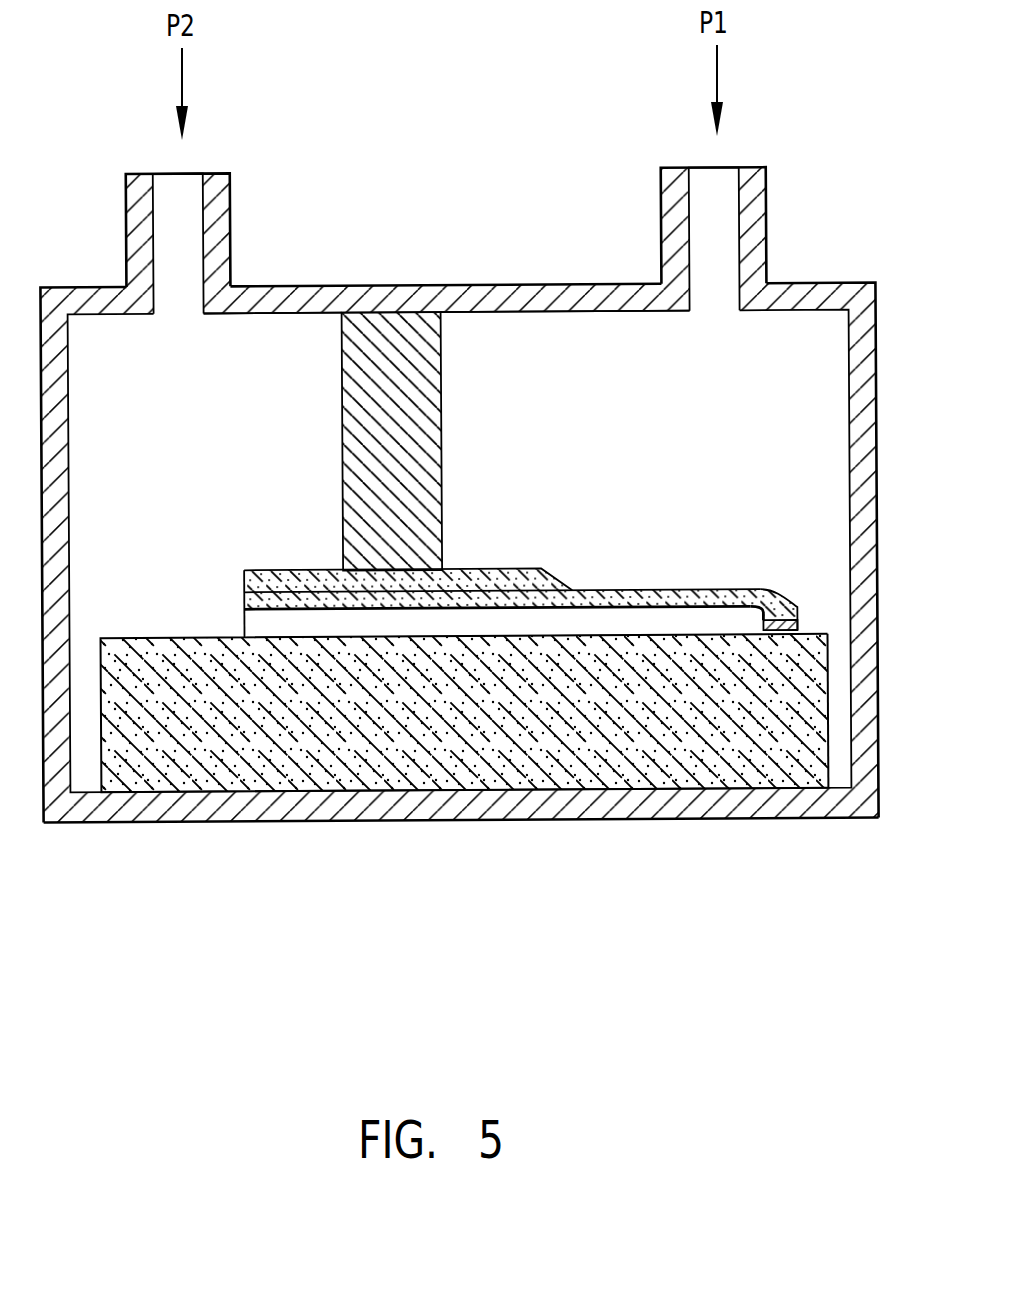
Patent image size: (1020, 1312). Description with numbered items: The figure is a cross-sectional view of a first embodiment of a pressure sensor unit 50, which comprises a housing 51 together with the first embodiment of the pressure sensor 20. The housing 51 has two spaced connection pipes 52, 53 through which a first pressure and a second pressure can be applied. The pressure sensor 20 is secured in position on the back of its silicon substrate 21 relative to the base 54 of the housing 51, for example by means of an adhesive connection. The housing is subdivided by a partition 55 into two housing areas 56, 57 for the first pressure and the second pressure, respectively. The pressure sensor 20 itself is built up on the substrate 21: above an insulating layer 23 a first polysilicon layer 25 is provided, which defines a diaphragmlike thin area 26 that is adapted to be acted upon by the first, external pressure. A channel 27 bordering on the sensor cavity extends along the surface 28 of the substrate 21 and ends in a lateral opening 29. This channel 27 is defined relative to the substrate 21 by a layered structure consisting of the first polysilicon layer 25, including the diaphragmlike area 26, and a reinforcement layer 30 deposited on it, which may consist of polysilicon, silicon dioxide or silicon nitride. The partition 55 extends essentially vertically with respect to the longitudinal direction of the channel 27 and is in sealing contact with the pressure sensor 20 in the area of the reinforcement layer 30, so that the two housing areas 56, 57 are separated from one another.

The pressure sensor 20 is at (640, 765).
The substrate 21 is at (805, 750).
The insulating layer 23 is at (803, 630).
The first polysilicon layer 25 is at (782, 608).
The diaphragmlike thin area 26 is at (610, 598).
The channel 27 is at (303, 630).
The surface of the substrate 28 is at (333, 640).
The lateral opening 29 is at (243, 627).
The reinforcement layer 30 is at (458, 587).
The pressure sensor unit 50 is at (379, 145).
The housing 51 is at (862, 340).
The connection pipe 52 is at (760, 222).
The connection pipe 53 is at (215, 225).
The base of the housing 54 is at (513, 803).
The partition 55 is at (375, 348).
The housing area 56 is at (552, 355).
The housing area 57 is at (257, 358).